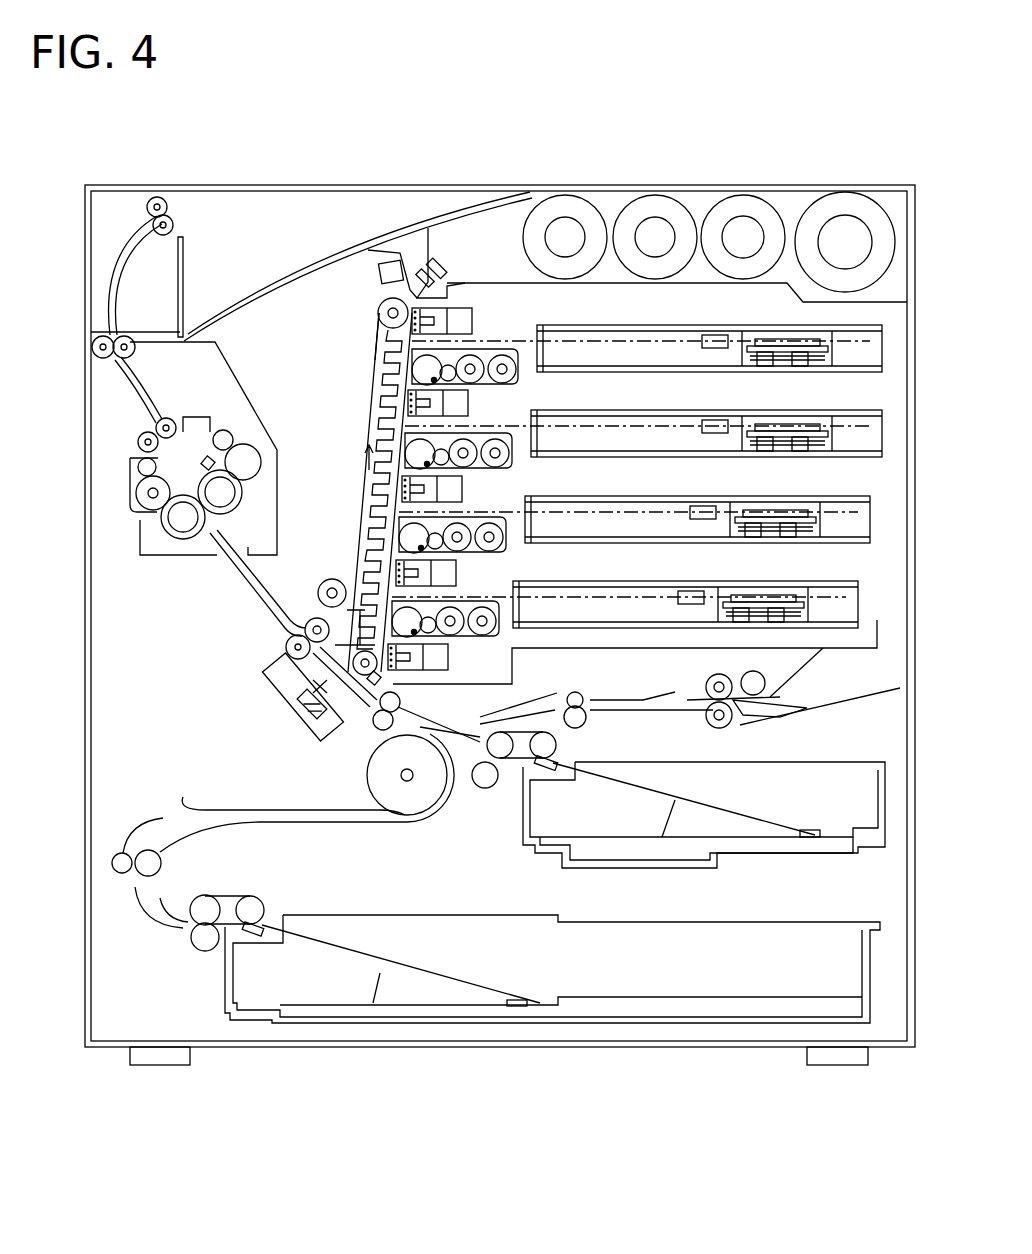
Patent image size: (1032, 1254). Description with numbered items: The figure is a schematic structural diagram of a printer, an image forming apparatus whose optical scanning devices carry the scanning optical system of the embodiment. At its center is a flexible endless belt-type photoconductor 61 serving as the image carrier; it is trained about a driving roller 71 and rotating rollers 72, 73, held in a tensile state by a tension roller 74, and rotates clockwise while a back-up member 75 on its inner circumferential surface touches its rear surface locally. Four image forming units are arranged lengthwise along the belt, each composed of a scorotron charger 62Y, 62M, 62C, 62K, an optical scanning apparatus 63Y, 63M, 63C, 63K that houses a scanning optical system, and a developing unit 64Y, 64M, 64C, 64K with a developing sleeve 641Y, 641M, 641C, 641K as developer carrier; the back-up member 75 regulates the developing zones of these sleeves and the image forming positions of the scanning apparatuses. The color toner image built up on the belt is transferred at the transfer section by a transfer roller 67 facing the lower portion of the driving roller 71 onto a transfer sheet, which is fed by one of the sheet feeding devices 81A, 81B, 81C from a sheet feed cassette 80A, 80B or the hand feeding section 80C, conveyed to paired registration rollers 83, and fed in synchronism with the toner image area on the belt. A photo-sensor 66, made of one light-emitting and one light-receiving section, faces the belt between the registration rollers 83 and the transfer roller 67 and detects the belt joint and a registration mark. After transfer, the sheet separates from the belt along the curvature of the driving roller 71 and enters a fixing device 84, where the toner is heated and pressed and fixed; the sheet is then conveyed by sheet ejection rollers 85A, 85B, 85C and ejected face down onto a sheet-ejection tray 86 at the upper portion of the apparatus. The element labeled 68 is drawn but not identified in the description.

The belt-type photoconductor 61 is at (374, 418).
The scorotron charger (yellow) 62Y is at (472, 322).
The scorotron charger (magenta) 62M is at (468, 402).
The scorotron charger (cyan) 62C is at (462, 490).
The scorotron charger (black) 62K is at (472, 570).
The optical scanning apparatus (yellow) 63Y is at (670, 325).
The optical scanning apparatus (magenta) 63M is at (670, 410).
The optical scanning apparatus (cyan) 63C is at (660, 496).
The optical scanning apparatus (black) 63K is at (655, 581).
The developing unit (yellow) 64Y is at (547, 340).
The developing unit (magenta) 64M is at (540, 425).
The developing unit (cyan) 64C is at (572, 492).
The developing unit (black) 64K is at (522, 597).
The developing sleeve (yellow) 641Y is at (377, 368).
The developing sleeve (magenta) 641M is at (372, 453).
The developing sleeve (cyan) 641C is at (376, 540).
The developing sleeve (black) 641K is at (372, 580).
The photo-sensor 66 is at (310, 704).
The transfer roller 67 is at (263, 676).
The waste toner collecting unit 68 is at (408, 248).
The driving roller 71 is at (304, 632).
The rotating roller 72 is at (365, 675).
The rotating roller 73 is at (381, 302).
The tension roller 74 is at (318, 593).
The back-up member 75 is at (373, 358).
The sheet feed cassette 80A is at (843, 772).
The sheet feed cassette 80B is at (702, 945).
The hand feeding section 80C is at (808, 707).
The sheet feeding device 81A is at (513, 765).
The sheet feeding device 81B is at (260, 898).
The sheet feeding device 81C is at (705, 685).
The paired registration rollers 83 is at (402, 702).
The fixing device 84 is at (133, 545).
The sheet ejection roller 85A is at (163, 415).
The sheet ejection roller 85B is at (123, 334).
The sheet ejection roller 85C is at (177, 226).
The sheet-ejection tray 86 is at (262, 294).